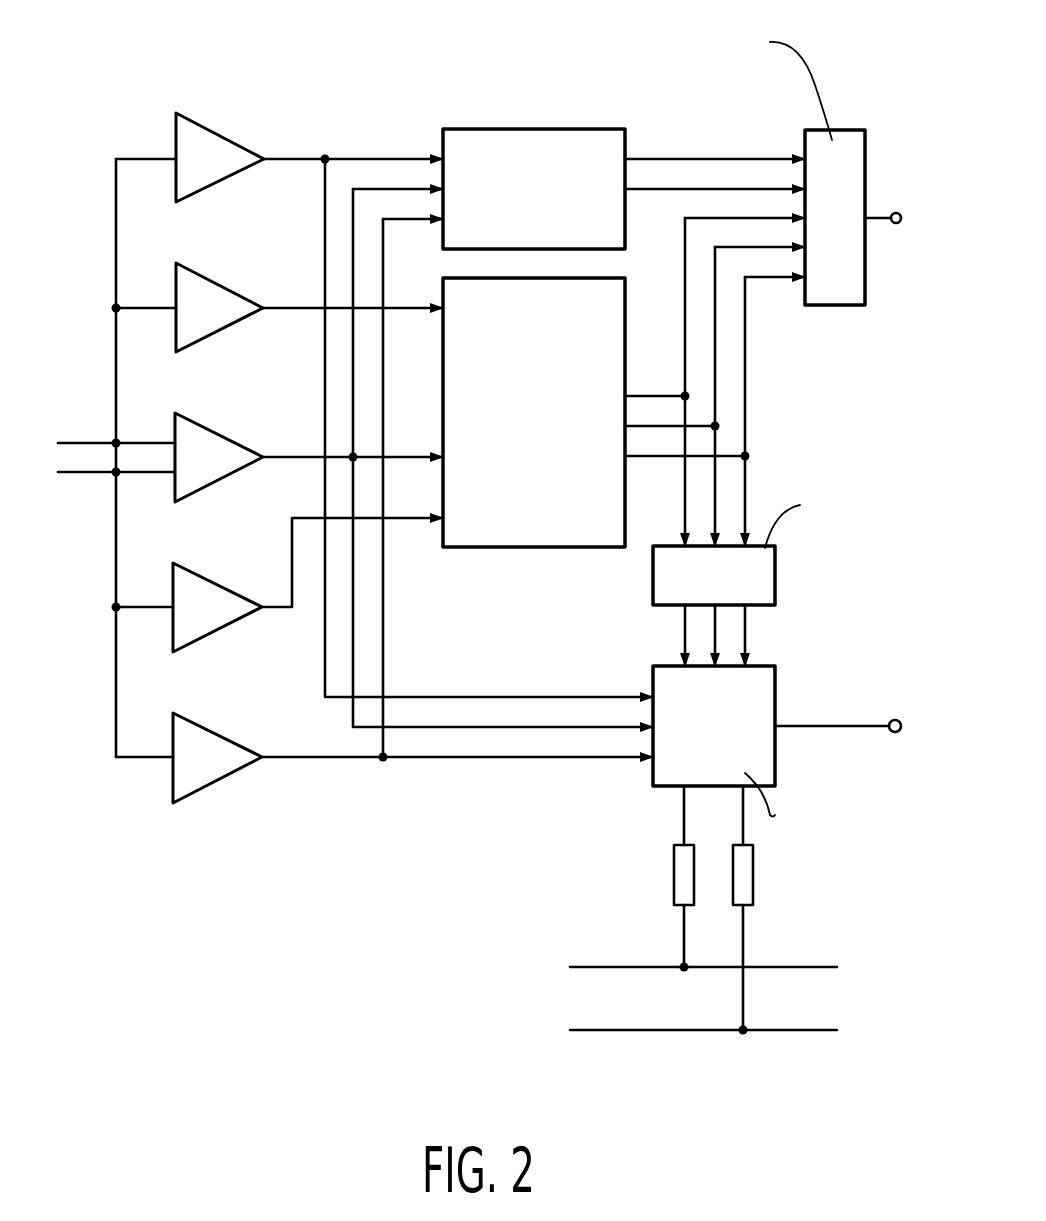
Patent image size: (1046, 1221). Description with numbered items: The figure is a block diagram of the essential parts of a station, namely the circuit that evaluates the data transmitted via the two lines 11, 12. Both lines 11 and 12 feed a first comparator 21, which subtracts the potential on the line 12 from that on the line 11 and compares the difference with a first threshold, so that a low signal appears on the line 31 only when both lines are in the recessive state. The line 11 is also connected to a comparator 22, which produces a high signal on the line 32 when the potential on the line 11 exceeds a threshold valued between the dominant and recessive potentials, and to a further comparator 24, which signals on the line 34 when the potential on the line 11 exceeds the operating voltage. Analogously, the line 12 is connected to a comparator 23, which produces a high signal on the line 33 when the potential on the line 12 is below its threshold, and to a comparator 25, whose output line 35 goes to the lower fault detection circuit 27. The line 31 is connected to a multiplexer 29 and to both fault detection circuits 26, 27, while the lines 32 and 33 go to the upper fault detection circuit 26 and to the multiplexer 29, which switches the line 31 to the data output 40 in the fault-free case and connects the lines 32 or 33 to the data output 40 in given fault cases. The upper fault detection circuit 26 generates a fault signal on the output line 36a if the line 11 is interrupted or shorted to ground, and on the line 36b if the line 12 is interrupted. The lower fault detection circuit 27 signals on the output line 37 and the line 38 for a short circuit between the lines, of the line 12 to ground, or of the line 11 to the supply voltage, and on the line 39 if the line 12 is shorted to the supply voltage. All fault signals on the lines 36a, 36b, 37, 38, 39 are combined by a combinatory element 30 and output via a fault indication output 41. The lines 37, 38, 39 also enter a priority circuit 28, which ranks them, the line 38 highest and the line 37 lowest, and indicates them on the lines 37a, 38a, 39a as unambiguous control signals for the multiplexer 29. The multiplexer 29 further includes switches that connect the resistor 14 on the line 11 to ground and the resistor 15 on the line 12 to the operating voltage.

The line 11 is at (87, 442).
The line 12 is at (83, 477).
The resistor 14 is at (674, 890).
The resistor 15 is at (755, 887).
The first comparator 21 is at (207, 425).
The comparator 22 is at (205, 125).
The comparator 23 is at (245, 747).
The further comparator 24 is at (207, 273).
The comparator 25 is at (243, 597).
The upper fault detection circuit 26 is at (628, 137).
The lower fault detection circuit 27 is at (515, 548).
The priority circuit 28 is at (778, 582).
The multiplexer 29 is at (652, 772).
The combinatory element 30 is at (828, 308).
The line 31 is at (285, 457).
The line 32 is at (357, 157).
The line 33 is at (418, 762).
The line 34 is at (287, 311).
The amplifier output line 35 is at (277, 610).
The output line 36a is at (718, 157).
The line 36b is at (663, 192).
The output line 37 is at (655, 394).
The line 38 is at (667, 428).
The line 39 is at (630, 458).
The line 37a is at (683, 648).
The line 38a is at (716, 645).
The line 39a is at (745, 648).
The data output 40 is at (898, 717).
The fault indication output 41 is at (897, 224).